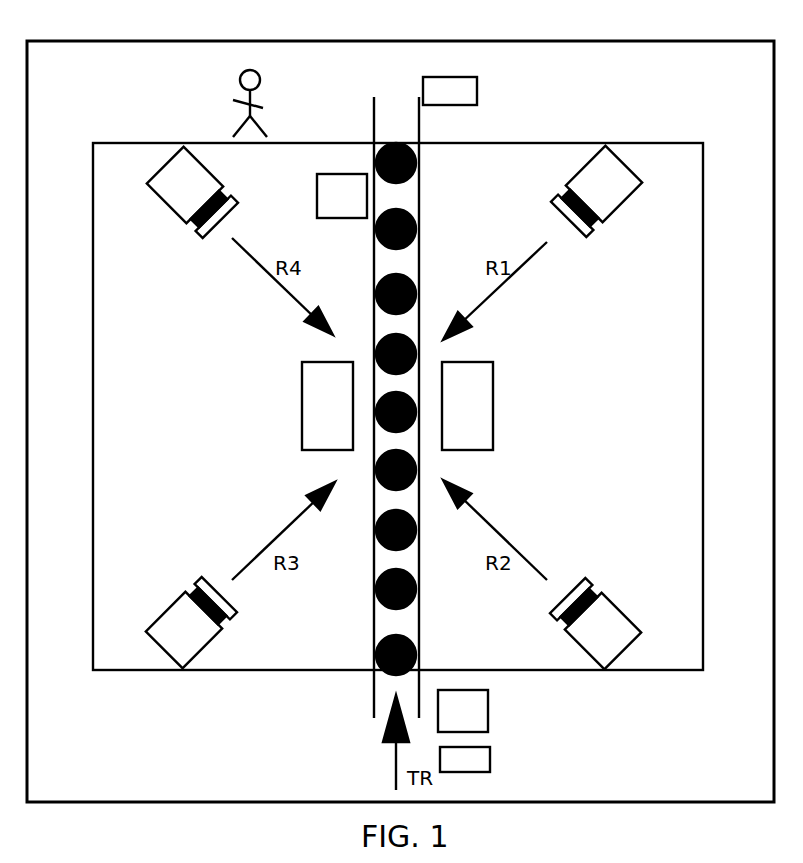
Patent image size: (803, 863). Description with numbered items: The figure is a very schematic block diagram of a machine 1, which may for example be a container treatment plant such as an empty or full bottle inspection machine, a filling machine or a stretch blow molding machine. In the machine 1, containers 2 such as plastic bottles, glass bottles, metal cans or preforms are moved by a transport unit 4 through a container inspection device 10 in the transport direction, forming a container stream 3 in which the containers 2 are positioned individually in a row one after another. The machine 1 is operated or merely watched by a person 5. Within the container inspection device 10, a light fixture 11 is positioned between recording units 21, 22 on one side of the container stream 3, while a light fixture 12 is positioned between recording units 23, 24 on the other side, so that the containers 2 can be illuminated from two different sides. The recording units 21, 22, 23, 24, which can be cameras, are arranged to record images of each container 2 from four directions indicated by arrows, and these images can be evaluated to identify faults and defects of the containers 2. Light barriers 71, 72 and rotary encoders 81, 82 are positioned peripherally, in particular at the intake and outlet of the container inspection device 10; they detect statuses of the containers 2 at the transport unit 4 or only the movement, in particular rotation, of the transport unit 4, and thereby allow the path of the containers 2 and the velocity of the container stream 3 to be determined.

The machine 1 is at (630, 41).
The containers 2 is at (412, 149).
The container stream 3 is at (200, 714).
The transport unit 4 is at (373, 683).
The person 5 is at (265, 78).
The container inspection device 10 is at (530, 143).
The light fixture 11 is at (493, 418).
The light fixture 12 is at (302, 417).
The recording unit 21 is at (614, 155).
The recording unit 22 is at (626, 611).
The recording unit 23 is at (162, 611).
The recording unit 24 is at (178, 158).
The light barrier 71 is at (317, 207).
The light barrier 72 is at (488, 706).
The rotary encoder 81 is at (477, 94).
The rotary encoder 82 is at (490, 762).